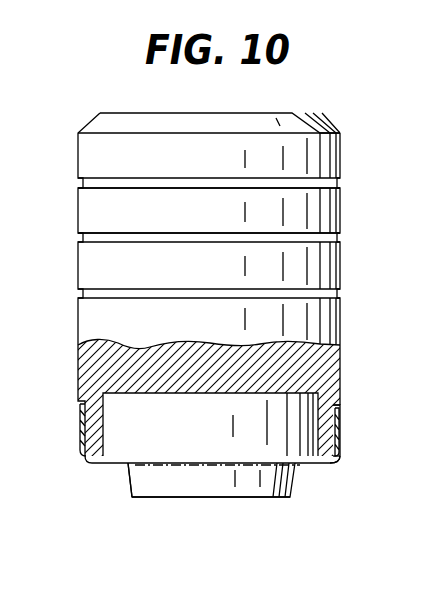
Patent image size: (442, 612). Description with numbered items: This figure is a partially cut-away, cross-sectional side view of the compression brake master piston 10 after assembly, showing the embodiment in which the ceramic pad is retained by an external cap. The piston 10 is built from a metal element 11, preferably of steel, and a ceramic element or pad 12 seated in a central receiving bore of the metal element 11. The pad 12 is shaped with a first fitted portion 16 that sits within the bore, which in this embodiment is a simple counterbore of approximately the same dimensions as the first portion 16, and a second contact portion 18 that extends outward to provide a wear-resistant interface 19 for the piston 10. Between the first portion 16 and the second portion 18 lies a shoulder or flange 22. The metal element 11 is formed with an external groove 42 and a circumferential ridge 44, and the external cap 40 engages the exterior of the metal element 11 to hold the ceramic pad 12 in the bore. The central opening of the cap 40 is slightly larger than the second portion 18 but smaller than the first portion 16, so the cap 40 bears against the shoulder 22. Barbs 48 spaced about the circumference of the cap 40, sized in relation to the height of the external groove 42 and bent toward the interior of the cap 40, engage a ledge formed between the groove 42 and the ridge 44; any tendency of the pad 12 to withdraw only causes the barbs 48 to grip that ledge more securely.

The compression brake master piston 10 is at (360, 110).
The metal element 11 is at (342, 212).
The ceramic element or pad 12 is at (293, 480).
The first fitted portion 16 is at (115, 406).
The second contact portion 18 is at (130, 482).
The wear-resistant interface 19 is at (225, 497).
The shoulder or flange 22 is at (345, 463).
The external cap 40 is at (344, 430).
The external groove 42 is at (345, 418).
The circumferential ridge 44 is at (346, 441).
The barbs 48 is at (82, 430).